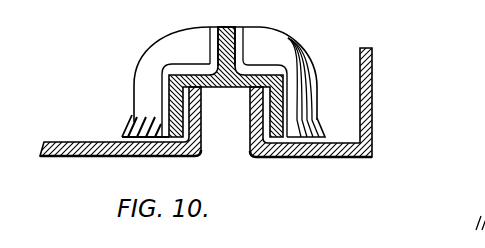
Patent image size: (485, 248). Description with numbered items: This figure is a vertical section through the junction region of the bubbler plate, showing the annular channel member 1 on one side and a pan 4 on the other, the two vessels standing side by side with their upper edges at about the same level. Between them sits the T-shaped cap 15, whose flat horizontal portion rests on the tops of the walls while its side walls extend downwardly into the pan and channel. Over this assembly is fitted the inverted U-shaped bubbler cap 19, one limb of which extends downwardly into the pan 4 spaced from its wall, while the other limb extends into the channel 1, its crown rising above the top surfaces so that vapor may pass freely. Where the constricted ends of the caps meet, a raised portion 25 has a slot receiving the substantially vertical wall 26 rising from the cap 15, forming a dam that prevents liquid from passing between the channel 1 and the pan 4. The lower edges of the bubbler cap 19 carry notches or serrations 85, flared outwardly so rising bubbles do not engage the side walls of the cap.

The annular channel member 1 is at (373, 120).
The pan 4 is at (73, 141).
The T-shaped cap 15 is at (247, 88).
The bubbler cap 19 is at (290, 37).
The raised portion 25 is at (243, 28).
The vertical wall 26 is at (226, 27).
The notches or serrations 85 is at (133, 131).